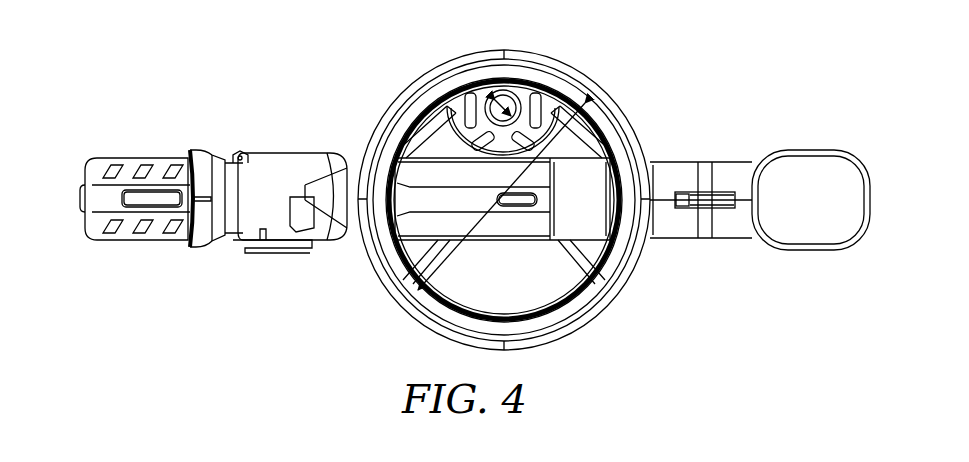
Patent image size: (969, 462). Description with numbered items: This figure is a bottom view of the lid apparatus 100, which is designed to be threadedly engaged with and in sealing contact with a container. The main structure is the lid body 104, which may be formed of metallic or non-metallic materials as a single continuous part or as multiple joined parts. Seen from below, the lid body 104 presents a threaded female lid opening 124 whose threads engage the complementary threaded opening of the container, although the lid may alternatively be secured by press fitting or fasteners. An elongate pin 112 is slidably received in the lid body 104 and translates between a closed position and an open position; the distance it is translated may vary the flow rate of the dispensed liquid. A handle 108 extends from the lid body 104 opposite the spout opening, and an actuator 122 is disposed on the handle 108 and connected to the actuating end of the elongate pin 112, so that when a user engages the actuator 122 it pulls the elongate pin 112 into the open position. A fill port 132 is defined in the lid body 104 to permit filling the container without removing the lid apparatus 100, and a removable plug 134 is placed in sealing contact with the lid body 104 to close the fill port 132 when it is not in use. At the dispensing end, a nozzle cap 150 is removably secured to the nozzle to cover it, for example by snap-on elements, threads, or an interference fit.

The lid apparatus 100 is at (678, 52).
The lid body 104 is at (436, 122).
The handle 108 is at (806, 165).
The elongate pin 112 is at (437, 204).
The actuator 122 is at (702, 208).
The threaded female lid opening 124 is at (497, 200).
The fill port 132 is at (514, 98).
The removable plug 134 is at (488, 100).
The nozzle cap 150 is at (136, 160).